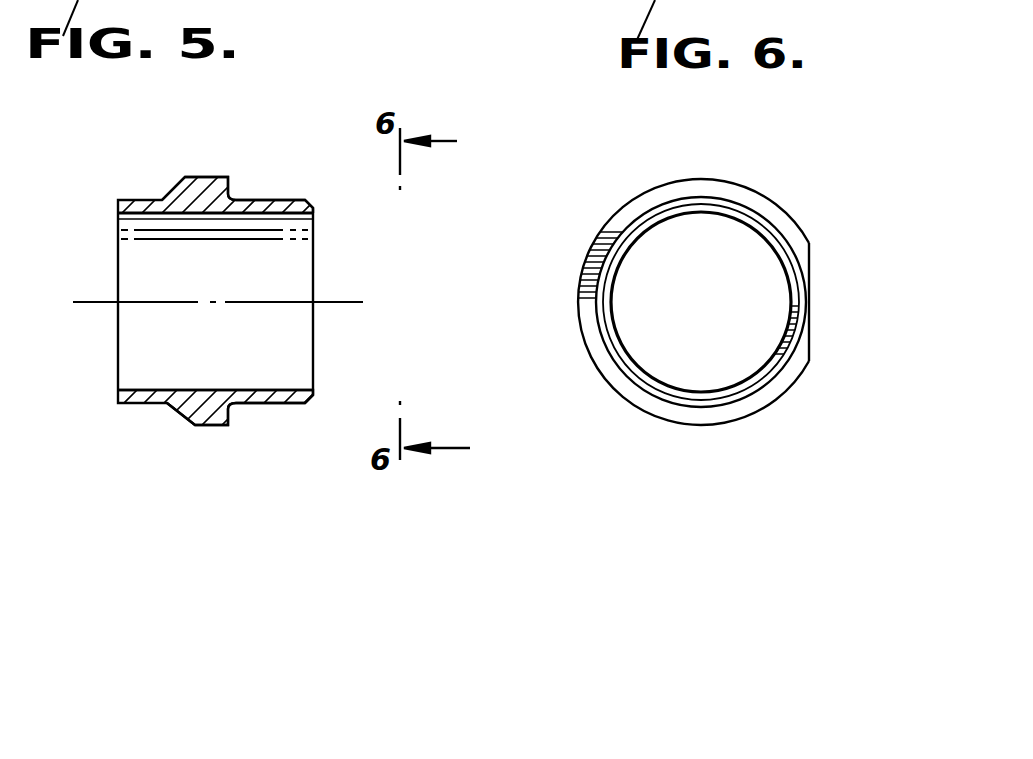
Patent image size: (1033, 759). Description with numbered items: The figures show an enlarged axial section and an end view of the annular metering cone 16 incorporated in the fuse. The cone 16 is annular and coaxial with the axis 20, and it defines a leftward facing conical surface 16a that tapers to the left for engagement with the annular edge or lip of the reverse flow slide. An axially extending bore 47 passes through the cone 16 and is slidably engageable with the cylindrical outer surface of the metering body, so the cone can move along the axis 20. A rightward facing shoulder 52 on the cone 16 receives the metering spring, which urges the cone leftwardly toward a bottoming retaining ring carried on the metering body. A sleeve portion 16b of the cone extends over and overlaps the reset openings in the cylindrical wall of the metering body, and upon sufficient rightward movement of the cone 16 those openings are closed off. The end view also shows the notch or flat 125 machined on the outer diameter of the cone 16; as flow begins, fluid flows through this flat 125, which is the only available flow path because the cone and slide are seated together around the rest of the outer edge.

In FIG. 5, the metering cone 16 is at (121, 437).
In FIG. 6, the metering cone 16 is at (773, 170).
In FIG. 5, the conical surface 16a is at (178, 184).
In FIG. 5, the sleeve portion 16b is at (275, 201).
In FIG. 5, the axis 20 is at (93, 300).
In FIG. 5, the bore 47 is at (160, 390).
In FIG. 6, the bore 47 is at (613, 284).
In FIG. 5, the rightward facing shoulder 52 is at (237, 411).
In FIG. 6, the rightward facing shoulder 52 is at (688, 413).
In FIG. 6, the flat 125 is at (810, 308).